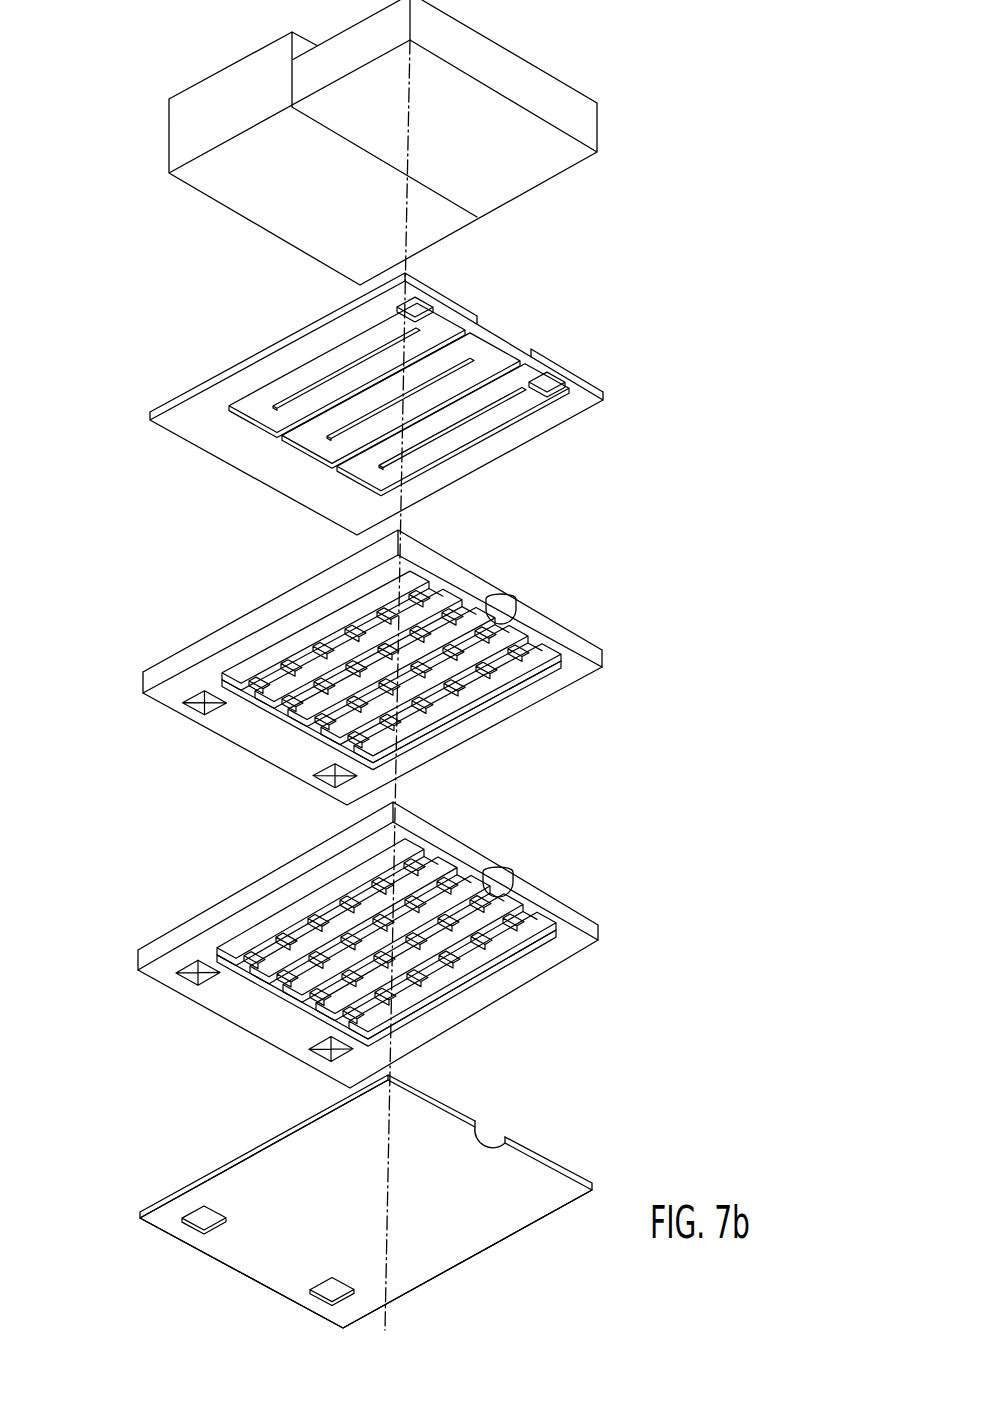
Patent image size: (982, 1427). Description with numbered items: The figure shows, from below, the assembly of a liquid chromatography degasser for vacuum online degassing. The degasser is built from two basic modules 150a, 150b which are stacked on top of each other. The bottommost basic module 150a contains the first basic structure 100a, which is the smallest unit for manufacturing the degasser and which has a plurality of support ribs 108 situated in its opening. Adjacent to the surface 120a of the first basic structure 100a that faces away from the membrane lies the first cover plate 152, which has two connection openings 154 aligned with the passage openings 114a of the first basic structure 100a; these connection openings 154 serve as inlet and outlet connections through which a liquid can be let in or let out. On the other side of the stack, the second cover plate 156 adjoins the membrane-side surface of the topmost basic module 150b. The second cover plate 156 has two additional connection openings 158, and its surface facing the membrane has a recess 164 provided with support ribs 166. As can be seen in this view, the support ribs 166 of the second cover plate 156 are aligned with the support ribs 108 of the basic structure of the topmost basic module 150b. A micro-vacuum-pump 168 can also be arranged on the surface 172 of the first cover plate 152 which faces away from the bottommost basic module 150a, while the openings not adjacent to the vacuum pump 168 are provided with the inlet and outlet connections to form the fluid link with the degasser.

The micro-vacuum-pump 168 is at (563, 92).
The additional connection openings 158 is at (425, 308).
The support ribs 166 is at (296, 392).
The second cover plate 156 is at (595, 393).
The recess 164 is at (477, 395).
The basic module 150b is at (145, 672).
The first basic structure 100a is at (602, 648).
The support ribs 108 is at (468, 680).
The basic module 150a is at (140, 950).
The passage openings 114a is at (195, 982).
The surface 120a is at (543, 960).
The first cover plate 152 is at (542, 1168).
The connection openings 154 is at (200, 1224).
The surface 172 is at (490, 1227).